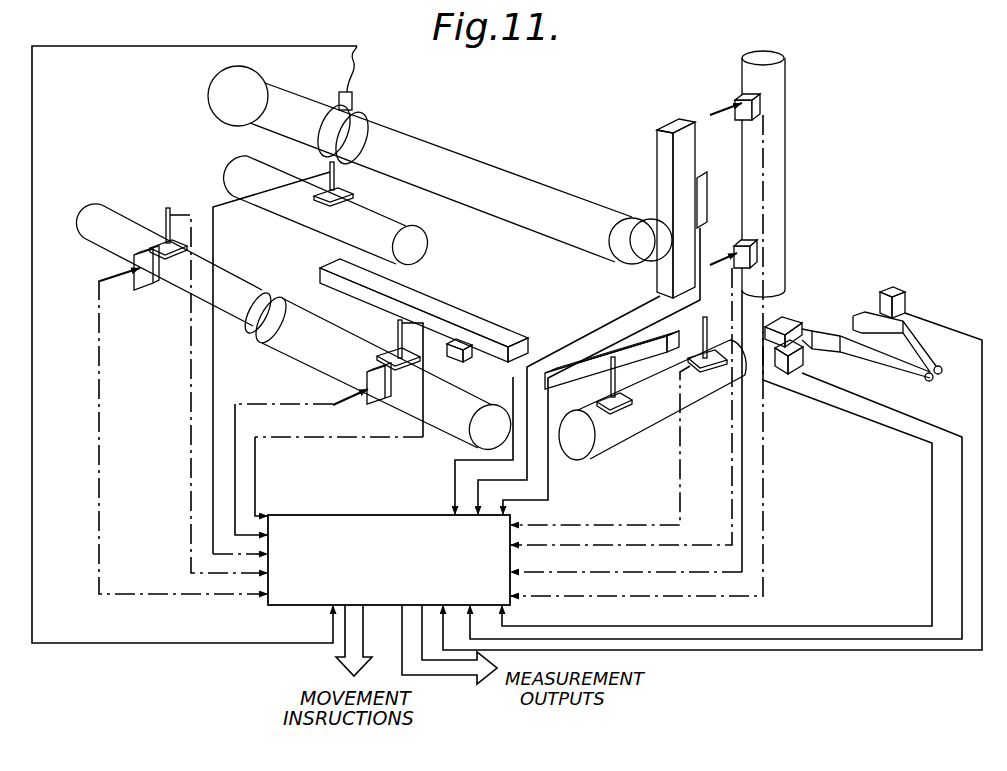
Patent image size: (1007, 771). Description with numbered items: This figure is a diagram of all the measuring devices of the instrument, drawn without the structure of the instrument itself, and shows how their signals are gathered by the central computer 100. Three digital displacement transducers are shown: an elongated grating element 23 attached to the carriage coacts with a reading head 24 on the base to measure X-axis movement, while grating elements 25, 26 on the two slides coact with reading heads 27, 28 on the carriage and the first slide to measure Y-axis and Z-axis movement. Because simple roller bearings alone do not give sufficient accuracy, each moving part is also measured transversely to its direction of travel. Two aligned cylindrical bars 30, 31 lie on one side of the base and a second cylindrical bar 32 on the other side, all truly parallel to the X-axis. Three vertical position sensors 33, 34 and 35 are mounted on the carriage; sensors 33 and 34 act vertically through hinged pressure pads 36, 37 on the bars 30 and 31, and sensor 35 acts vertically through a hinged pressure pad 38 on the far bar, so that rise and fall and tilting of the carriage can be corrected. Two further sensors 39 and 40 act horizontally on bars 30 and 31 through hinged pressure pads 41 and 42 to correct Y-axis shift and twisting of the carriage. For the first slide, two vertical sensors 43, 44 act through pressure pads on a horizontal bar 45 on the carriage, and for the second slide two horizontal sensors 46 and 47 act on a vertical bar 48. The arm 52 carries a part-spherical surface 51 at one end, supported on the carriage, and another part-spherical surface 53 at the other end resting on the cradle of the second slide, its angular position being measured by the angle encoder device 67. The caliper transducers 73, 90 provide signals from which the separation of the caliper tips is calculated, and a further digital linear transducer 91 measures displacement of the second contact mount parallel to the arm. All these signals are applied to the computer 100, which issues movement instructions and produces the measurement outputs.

The elongated grating element 23 is at (417, 302).
The reading head 24 is at (455, 357).
The grating element 25 is at (648, 338).
The grating element 26 is at (656, 163).
The reading head 27 is at (668, 378).
The reading head 28 is at (706, 173).
The cylindrical bar 30 is at (247, 284).
The cylindrical bar 31 is at (311, 320).
The second cylindrical bar 32 is at (392, 224).
The vertical position sensor 33 is at (166, 210).
The vertical position sensor 34 is at (399, 335).
The vertical position sensor 35 is at (330, 166).
The hinged pressure pad 36 is at (162, 238).
The hinged pressure pad 37 is at (378, 352).
The hinged pressure pad 38 is at (353, 199).
The sensor 39 is at (118, 279).
The sensor 40 is at (325, 388).
The hinged pressure pad 41 is at (145, 291).
The hinged pressure pad 42 is at (381, 398).
The vertical sensor 43 is at (627, 396).
The vertical sensor 44 is at (723, 364).
The horizontal bar 45 is at (607, 439).
The horizontal sensor 46 is at (727, 248).
The horizontal sensor 47 is at (720, 112).
The vertical bar 48 is at (768, 120).
The part-spherical surface 51 is at (256, 88).
The arm 52 is at (299, 108).
The part-spherical surface 53 is at (642, 230).
The angle encoder device 67 is at (366, 104).
The transducer 73 is at (906, 301).
The digital linear transducer 90 is at (790, 368).
The digital linear transducer 91 is at (787, 320).
The central computer 100 is at (338, 513).